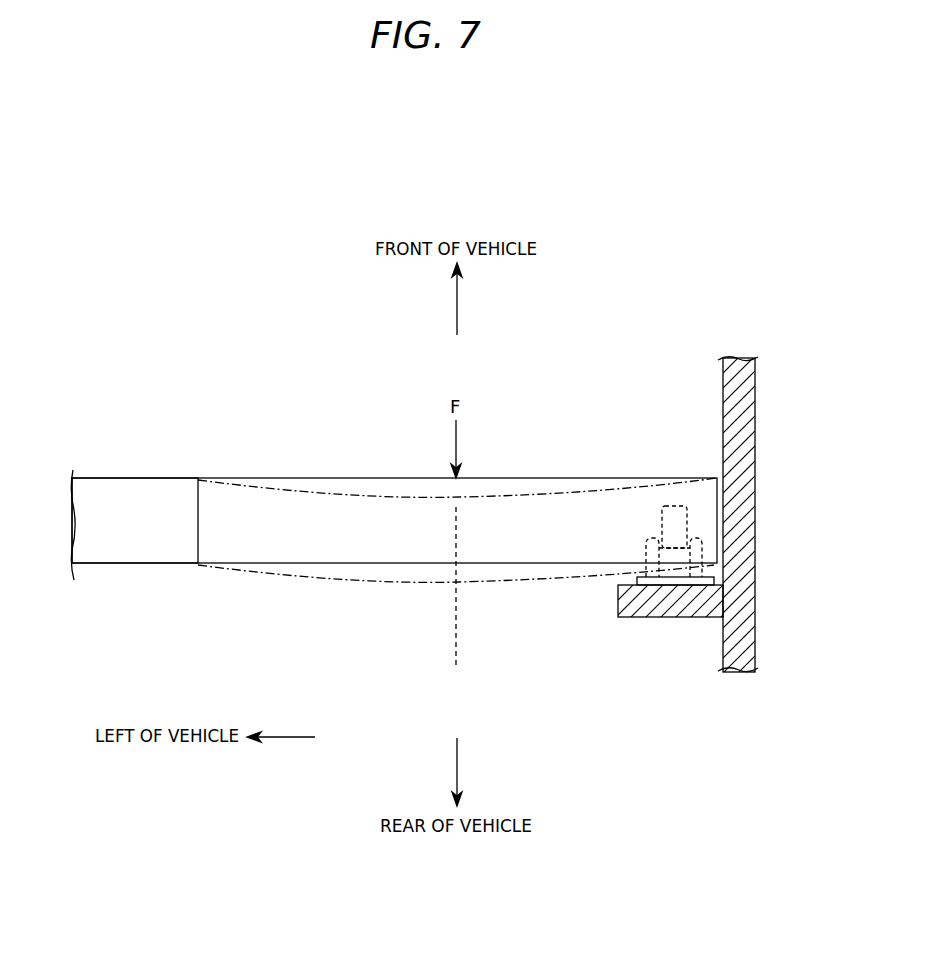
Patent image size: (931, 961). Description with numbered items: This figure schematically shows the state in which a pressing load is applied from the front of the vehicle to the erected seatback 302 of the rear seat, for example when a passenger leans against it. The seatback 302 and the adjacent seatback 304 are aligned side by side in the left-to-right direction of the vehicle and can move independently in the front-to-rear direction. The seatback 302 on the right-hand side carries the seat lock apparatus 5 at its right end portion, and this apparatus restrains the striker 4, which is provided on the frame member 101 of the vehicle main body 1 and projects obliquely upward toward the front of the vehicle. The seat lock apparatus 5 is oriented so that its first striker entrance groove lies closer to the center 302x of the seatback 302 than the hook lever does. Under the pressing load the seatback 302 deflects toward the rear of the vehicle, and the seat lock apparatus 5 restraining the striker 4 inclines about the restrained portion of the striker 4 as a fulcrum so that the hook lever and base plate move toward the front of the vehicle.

The vehicle main body 1 is at (756, 426).
The striker 4 is at (652, 537).
The seat lock apparatus 5 is at (678, 505).
The frame member 101 is at (672, 617).
The seatback 302 is at (274, 479).
The center of the seatback 302x is at (453, 624).
The seatback 304 is at (135, 565).